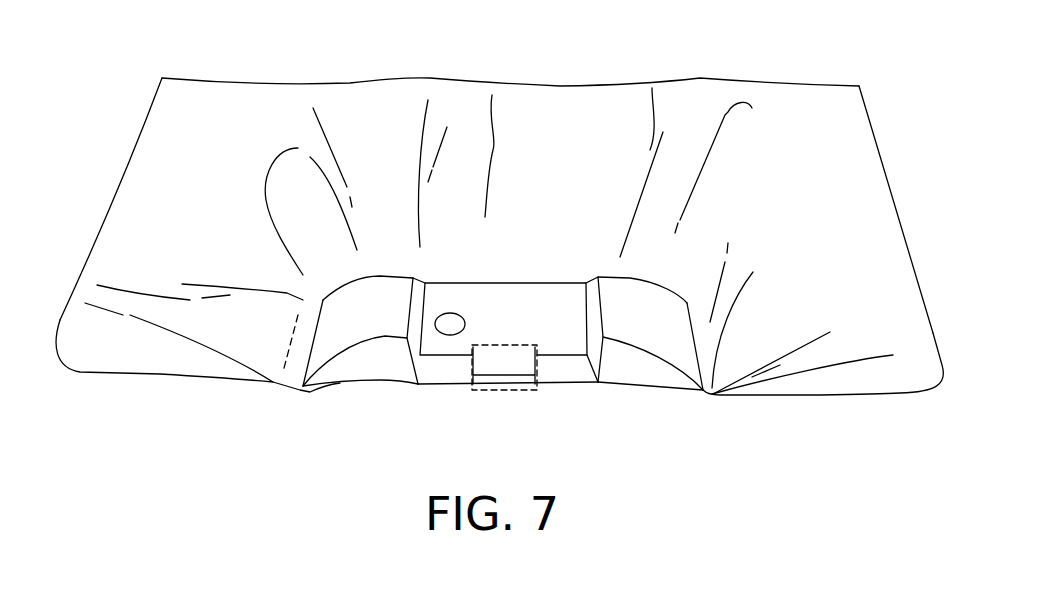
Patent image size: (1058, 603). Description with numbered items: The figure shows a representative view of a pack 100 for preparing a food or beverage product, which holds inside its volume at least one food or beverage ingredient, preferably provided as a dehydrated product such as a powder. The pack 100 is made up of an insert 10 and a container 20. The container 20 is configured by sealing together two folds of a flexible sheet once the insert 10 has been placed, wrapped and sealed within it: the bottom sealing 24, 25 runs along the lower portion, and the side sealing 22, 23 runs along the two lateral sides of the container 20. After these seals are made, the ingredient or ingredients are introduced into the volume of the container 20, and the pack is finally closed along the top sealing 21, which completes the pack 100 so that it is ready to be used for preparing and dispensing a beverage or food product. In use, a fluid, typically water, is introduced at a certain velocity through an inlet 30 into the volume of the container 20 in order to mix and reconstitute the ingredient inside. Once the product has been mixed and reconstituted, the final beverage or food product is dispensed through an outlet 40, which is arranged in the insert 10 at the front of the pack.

The pack 100 is at (501, 242).
The container 20 is at (501, 240).
The top sealing 21 is at (517, 80).
The side sealing 22 is at (115, 197).
The side sealing 23 is at (890, 212).
The bottom sealing 24 is at (158, 373).
The bottom sealing 25 is at (743, 400).
The insert 10 is at (503, 347).
The inlet 30 is at (450, 330).
The outlet 40 is at (505, 380).